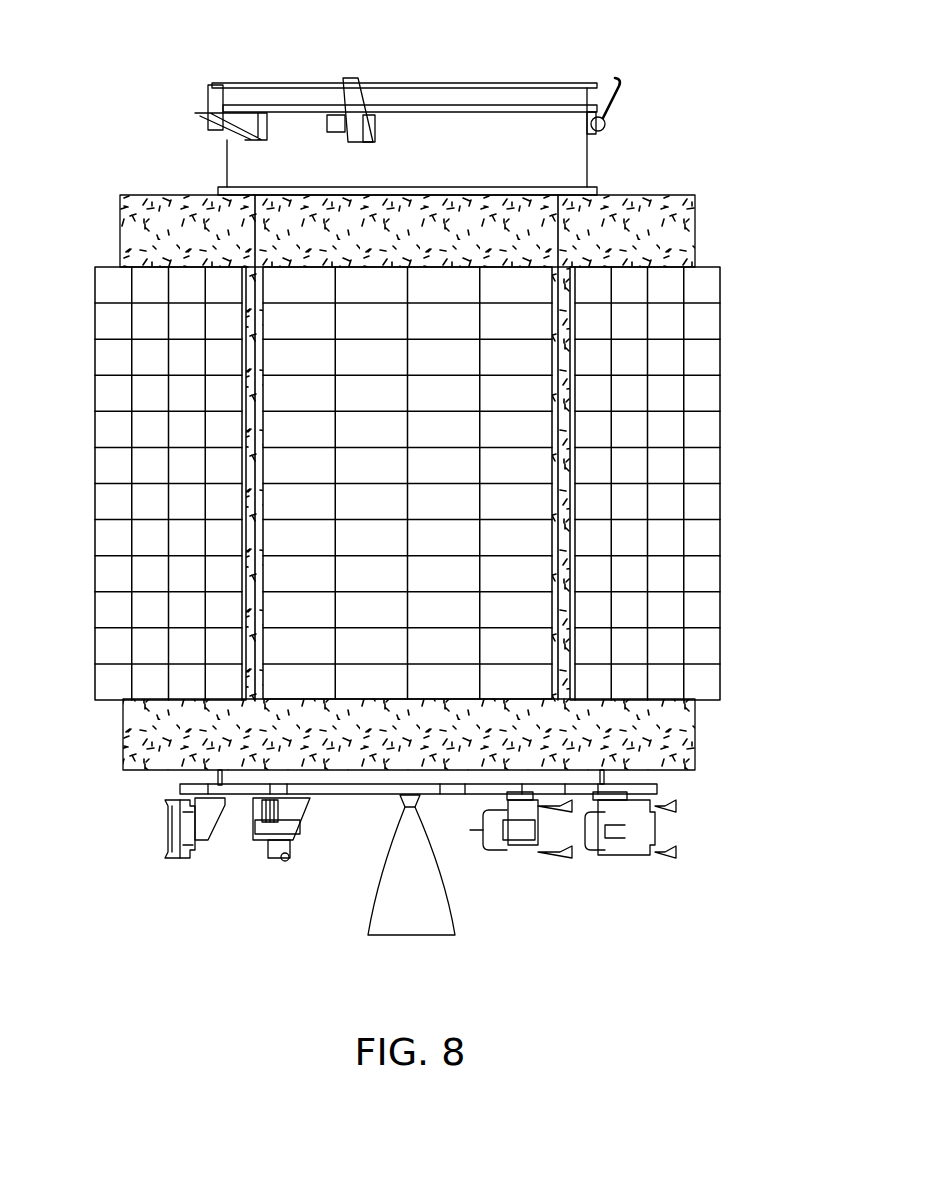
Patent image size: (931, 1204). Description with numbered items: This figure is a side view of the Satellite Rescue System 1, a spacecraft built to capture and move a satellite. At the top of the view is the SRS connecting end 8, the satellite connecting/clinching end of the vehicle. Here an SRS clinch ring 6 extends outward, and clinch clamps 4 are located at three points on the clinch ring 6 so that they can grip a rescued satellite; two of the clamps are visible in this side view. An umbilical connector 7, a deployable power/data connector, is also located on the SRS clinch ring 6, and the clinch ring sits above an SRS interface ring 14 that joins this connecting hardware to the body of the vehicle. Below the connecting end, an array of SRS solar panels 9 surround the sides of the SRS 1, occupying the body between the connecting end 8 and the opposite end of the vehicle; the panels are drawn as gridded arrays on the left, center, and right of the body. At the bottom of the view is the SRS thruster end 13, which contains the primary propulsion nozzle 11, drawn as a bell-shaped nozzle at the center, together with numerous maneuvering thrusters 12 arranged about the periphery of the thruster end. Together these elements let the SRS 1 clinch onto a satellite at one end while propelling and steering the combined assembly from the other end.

The Satellite Rescue System 1 is at (716, 56).
The clinch clamps 4 is at (352, 80).
The SRS clinch ring 6 is at (440, 82).
The umbilical connector 7 is at (212, 100).
The SRS connecting end 8 is at (532, 71).
The SRS solar panels 9 is at (95, 432).
The primary propulsion nozzle 11 is at (408, 920).
The maneuvering thrusters 12 is at (275, 825).
The SRS thruster end 13 is at (351, 851).
The SRS interface ring 14 is at (535, 145).